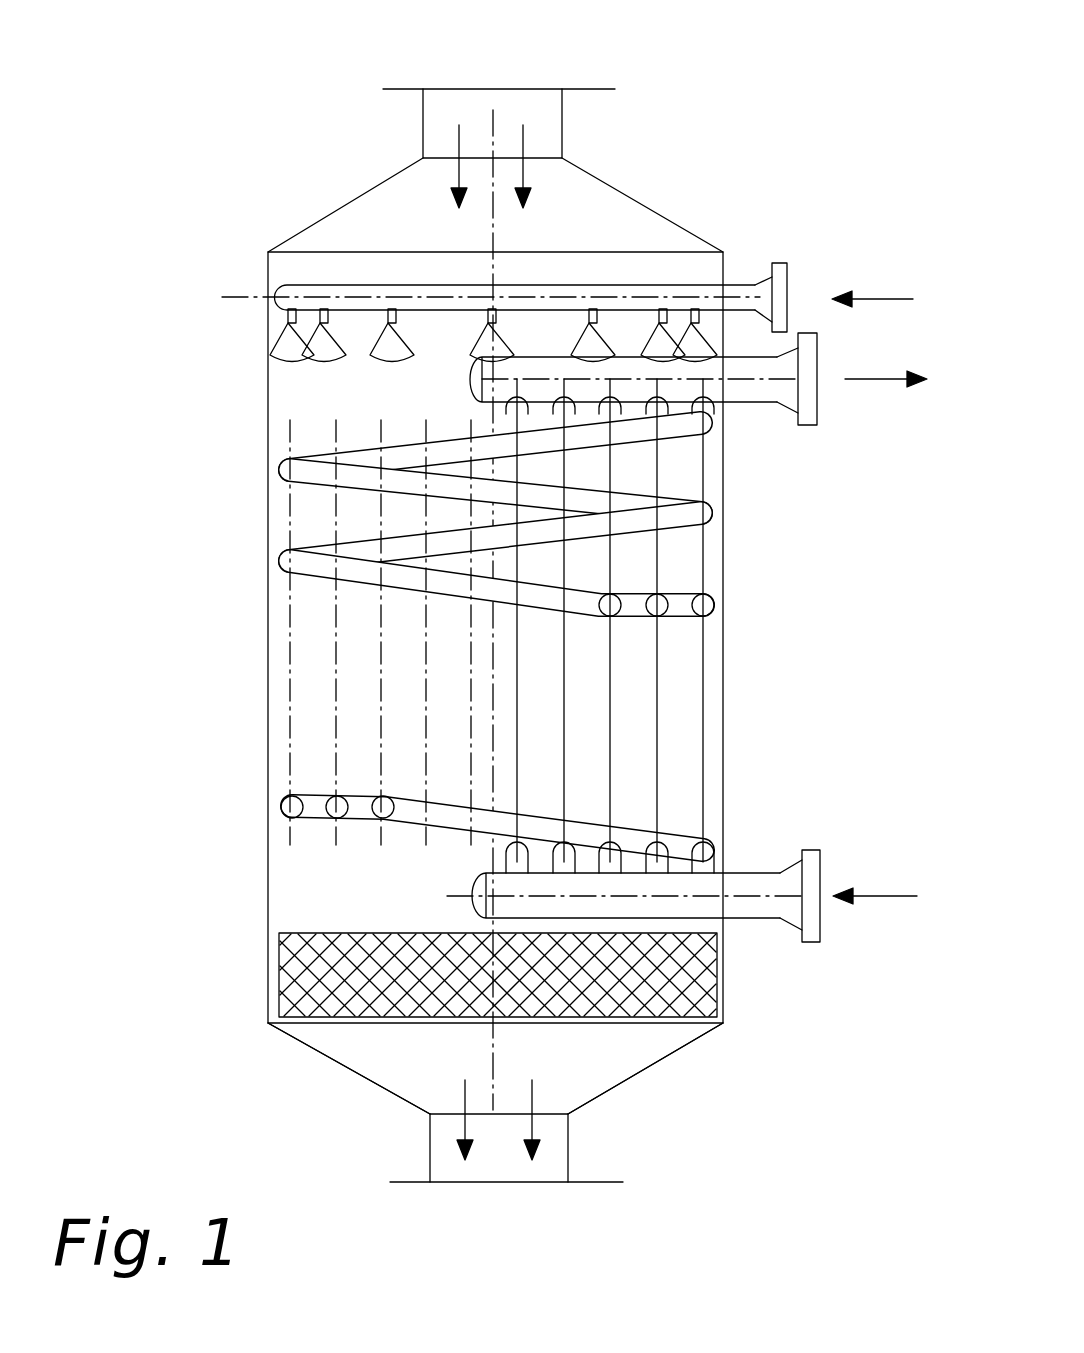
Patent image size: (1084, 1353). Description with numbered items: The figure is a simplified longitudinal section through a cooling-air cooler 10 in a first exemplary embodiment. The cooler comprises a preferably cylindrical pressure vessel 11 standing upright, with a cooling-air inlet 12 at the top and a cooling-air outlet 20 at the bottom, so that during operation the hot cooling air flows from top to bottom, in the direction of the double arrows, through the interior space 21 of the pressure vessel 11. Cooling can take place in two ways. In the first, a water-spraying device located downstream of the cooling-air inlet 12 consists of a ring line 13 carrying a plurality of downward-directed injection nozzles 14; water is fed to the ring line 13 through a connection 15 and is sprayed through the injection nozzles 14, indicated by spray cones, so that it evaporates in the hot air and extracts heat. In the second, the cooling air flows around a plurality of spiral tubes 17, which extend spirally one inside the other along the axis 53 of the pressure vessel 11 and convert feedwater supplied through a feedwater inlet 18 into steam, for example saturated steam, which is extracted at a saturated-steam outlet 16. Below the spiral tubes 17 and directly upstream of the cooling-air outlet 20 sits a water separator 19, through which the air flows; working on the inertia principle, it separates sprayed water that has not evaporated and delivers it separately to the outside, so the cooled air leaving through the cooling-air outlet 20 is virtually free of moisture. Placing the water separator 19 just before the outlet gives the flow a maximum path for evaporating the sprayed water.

The cooling-air cooler 10 is at (202, 697).
The pressure vessel 11 is at (727, 640).
The cooling-air inlet 12 is at (527, 98).
The ring line 13 is at (283, 295).
The injection nozzles 14 is at (288, 323).
The connection 15 is at (790, 277).
The saturated-steam outlet 16 is at (797, 418).
The spiral tubes 17 is at (707, 505).
The feedwater inlet 18 is at (820, 872).
The water separator 19 is at (700, 993).
The cooling-air outlet 20 is at (560, 1162).
The interior space 21 is at (307, 907).
The axis 53 is at (497, 1062).